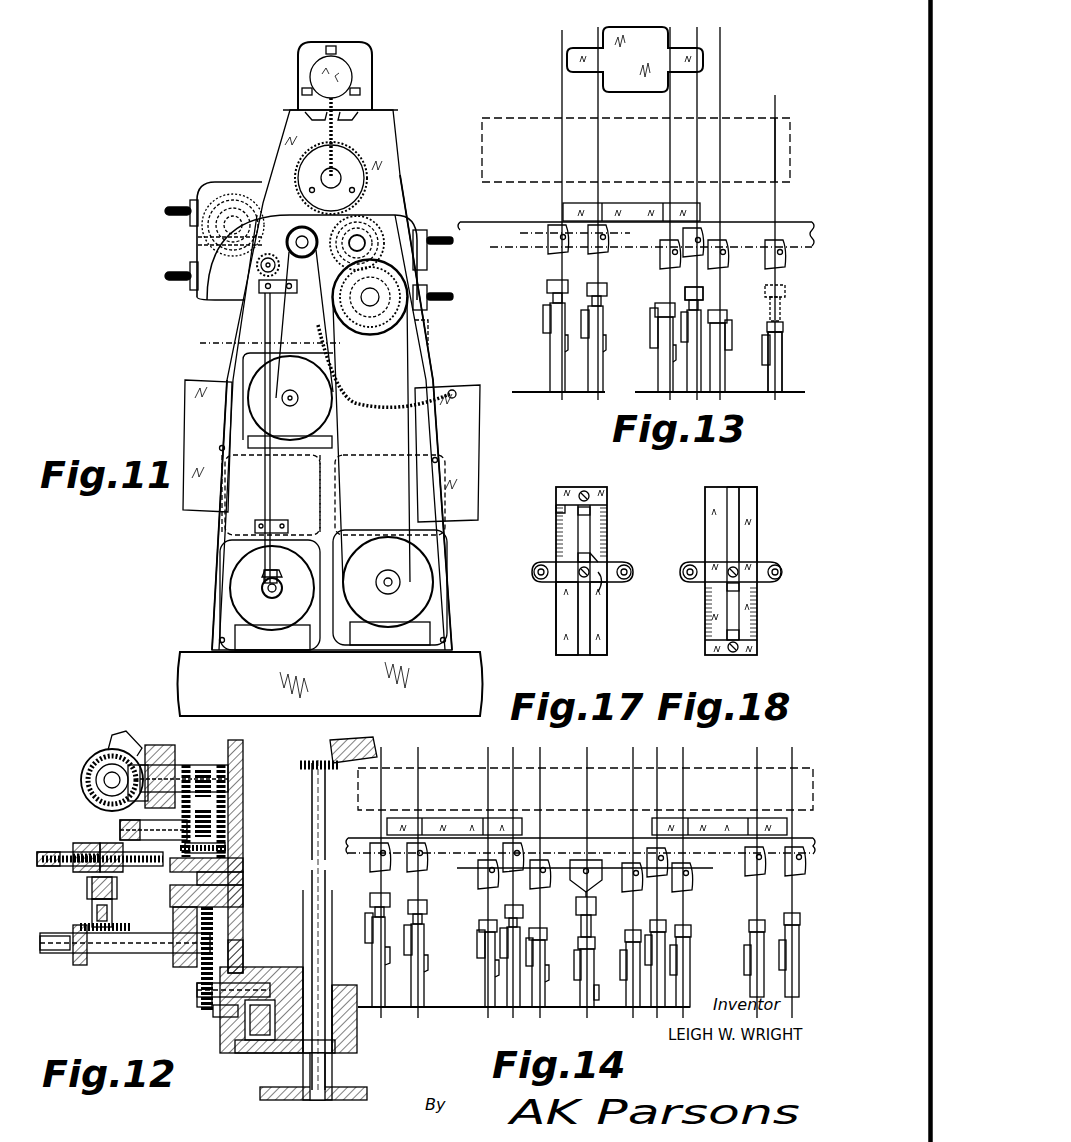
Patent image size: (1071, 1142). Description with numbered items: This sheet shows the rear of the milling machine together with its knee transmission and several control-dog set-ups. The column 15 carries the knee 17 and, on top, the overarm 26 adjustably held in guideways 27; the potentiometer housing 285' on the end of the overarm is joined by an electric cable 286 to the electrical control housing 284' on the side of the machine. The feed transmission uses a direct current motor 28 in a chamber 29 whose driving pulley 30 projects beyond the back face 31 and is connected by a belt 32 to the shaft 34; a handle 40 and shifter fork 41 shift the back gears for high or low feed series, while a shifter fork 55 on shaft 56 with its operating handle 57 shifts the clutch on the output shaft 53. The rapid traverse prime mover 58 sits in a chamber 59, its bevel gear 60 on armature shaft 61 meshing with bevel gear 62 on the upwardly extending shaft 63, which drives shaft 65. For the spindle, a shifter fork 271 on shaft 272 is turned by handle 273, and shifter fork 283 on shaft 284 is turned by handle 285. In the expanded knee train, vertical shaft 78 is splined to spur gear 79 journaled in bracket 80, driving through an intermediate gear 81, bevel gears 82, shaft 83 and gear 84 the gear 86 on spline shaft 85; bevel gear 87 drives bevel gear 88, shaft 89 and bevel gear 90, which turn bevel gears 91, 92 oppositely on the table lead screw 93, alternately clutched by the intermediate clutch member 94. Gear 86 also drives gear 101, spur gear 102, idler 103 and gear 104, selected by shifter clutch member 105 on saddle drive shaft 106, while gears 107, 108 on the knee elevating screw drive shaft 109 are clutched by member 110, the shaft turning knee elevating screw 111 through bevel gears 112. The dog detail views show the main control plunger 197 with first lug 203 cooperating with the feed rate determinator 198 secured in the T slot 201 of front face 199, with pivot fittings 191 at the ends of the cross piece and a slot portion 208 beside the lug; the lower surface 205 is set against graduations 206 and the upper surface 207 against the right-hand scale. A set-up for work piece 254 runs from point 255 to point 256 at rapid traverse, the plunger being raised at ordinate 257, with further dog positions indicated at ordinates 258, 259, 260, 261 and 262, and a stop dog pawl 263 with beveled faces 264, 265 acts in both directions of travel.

In FIG. 11, the column 15 is at (430, 366).
In FIG. 12, the knee 17 is at (243, 750).
In FIG. 11, the overarm 26 is at (360, 66).
In FIG. 11, the guideways 27 is at (366, 112).
In FIG. 11, the direct current motor 28 is at (240, 368).
In FIG. 11, the chamber 29 is at (212, 424).
In FIG. 11, the driving pulley 30 is at (283, 410).
In FIG. 11, the back face 31 is at (228, 522).
In FIG. 11, the belt 32 is at (290, 330).
In FIG. 11, the shaft 34 is at (302, 226).
In FIG. 11, the handle 40 is at (190, 268).
In FIG. 11, the shifter fork 41 is at (262, 274).
In FIG. 12, the output shaft 53 is at (367, 752).
In FIG. 11, the shifter fork 55 is at (212, 212).
In FIG. 11, the shaft 56 is at (205, 206).
In FIG. 11, the operating handle 57 is at (165, 211).
In FIG. 11, the prime mover 58 is at (240, 591).
In FIG. 11, the chamber 59 is at (228, 556).
In FIG. 11, the bevel gear 60 is at (262, 602).
In FIG. 11, the armature shaft 61 is at (258, 593).
In FIG. 11, the bevel gear 62 is at (262, 578).
In FIG. 11, the shaft 63 is at (273, 472).
In FIG. 11, the shaft 65 is at (275, 293).
In FIG. 12, the vertical shaft 78 is at (312, 796).
In FIG. 12, the spur gear 79 is at (345, 1035).
In FIG. 12, the bracket 80 is at (232, 1030).
In FIG. 12, the plate 81 is at (252, 1045).
In FIG. 12, the pair of bevel gears 82 is at (255, 1028).
In FIG. 12, the shaft 83 is at (242, 972).
In FIG. 12, the gear 84 is at (214, 1013).
In FIG. 12, the spline shaft 85 is at (131, 953).
In FIG. 12, the gear 86 is at (200, 975).
In FIG. 12, the bevel gear 87 is at (80, 963).
In FIG. 12, the bevel gear 88 is at (118, 924).
In FIG. 12, the shaft 89 is at (92, 916).
In FIG. 12, the bevel gear 90 is at (90, 893).
In FIG. 12, the bevel gear 91 is at (60, 850).
In FIG. 12, the bevel gear 92 is at (90, 842).
In FIG. 12, the table lead screw 93 is at (64, 868).
In FIG. 12, the intermediate clutch member 94 is at (103, 842).
In FIG. 12, the gear 101 is at (243, 912).
In FIG. 12, the spur gear 102 is at (238, 847).
In FIG. 12, the idler 103 is at (176, 892).
In FIG. 12, the gear 104 is at (172, 846).
In FIG. 12, the shifter clutch member 105 is at (214, 843).
In FIG. 12, the saddle drive shaft 106 is at (125, 829).
In FIG. 12, the gear 107 is at (186, 765).
In FIG. 12, the gear 108 is at (222, 765).
In FIG. 12, the knee elevating screw drive shaft 109 is at (162, 760).
In FIG. 12, the shiftable clutch member 110 is at (203, 770).
In FIG. 12, the knee elevating screw 111 is at (104, 780).
In FIG. 12, the pair of bevel gears 112 is at (92, 762).
In FIG. 17, the pivot 191 is at (535, 578).
In FIG. 18, the pivot 191 is at (688, 582).
In FIG. 13, the main control plunger 197 is at (782, 354).
In FIG. 14, the main control plunger 197 is at (688, 1000).
In FIG. 13, the feed rate determinator 198 is at (704, 293).
In FIG. 17, the feed rate determinator 198 is at (607, 498).
In FIG. 18, the feed rate determinator 198 is at (715, 568).
In FIG. 17, the front face 199 is at (562, 600).
In FIG. 18, the front face 199 is at (748, 546).
In FIG. 17, the T slot 201 is at (584, 625).
In FIG. 18, the T slot 201 is at (735, 512).
In FIG. 17, the first lug 203 is at (607, 516).
In FIG. 18, the lower surface 205 is at (742, 595).
In FIG. 17, the graduations 206 is at (556, 514).
In FIG. 17, the upper surface 207 is at (556, 528).
In FIG. 18, the upper surface 207 is at (757, 630).
In FIG. 17, the slot 208 is at (605, 560).
In FIG. 13, the work piece 254 is at (650, 42).
In FIG. 13, the point 255 is at (785, 182).
In FIG. 13, the point 256 is at (728, 182).
In FIG. 13, the ordinate 257 is at (782, 276).
In FIG. 13, the cam 258 is at (716, 265).
In FIG. 13, the cam 259 is at (697, 292).
In FIG. 13, the cam 260 is at (662, 280).
In FIG. 13, the cam 261 is at (596, 270).
In FIG. 13, the cam 262 is at (552, 268).
In FIG. 14, the pawl 263 is at (594, 880).
In FIG. 14, the beveled face 264 is at (577, 888).
In FIG. 14, the beveled face 265 is at (591, 905).
In FIG. 11, the shifter fork 271 is at (378, 330).
In FIG. 11, the shaft 272 is at (420, 330).
In FIG. 11, the handle 273 is at (432, 303).
In FIG. 11, the shifter fork 283 is at (370, 242).
In FIG. 11, the shaft 284 is at (399, 297).
In FIG. 11, the housing 284' is at (466, 453).
In FIG. 11, the handle 285 is at (439, 250).
In FIG. 11, the housing 285' is at (361, 69).
In FIG. 11, the electric cable 286 is at (338, 128).